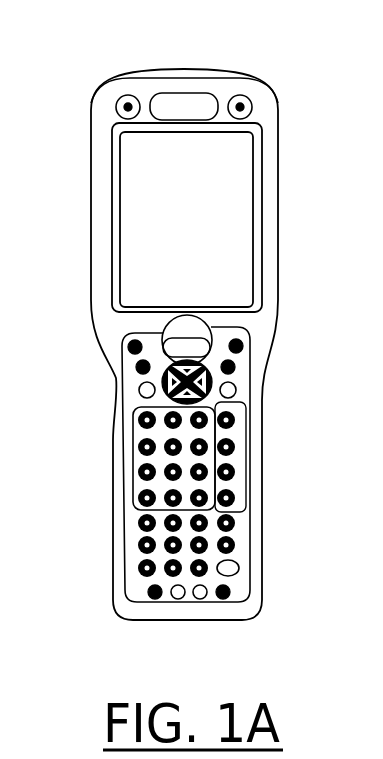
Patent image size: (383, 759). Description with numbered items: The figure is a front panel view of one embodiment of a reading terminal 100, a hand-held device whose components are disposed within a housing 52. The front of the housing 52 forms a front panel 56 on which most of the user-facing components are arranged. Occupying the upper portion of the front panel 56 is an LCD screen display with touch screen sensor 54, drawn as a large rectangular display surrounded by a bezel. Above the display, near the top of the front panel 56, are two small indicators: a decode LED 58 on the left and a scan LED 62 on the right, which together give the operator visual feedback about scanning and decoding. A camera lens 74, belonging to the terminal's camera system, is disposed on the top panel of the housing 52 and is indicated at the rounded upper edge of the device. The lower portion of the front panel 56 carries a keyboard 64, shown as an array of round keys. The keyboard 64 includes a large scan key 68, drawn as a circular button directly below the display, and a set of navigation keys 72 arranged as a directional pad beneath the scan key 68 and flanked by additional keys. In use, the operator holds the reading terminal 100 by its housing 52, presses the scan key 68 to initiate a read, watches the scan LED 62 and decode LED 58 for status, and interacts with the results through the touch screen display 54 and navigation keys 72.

The reading terminal 100 is at (107, 38).
The housing 52 is at (278, 257).
The LCD screen display with touch screen sensor 54 is at (132, 220).
The front panel 56 is at (91, 152).
The decode LED 58 is at (116, 99).
The scan LED 62 is at (252, 99).
The keyboard 64 is at (140, 462).
The scan key 68 is at (173, 337).
The navigation keys 72 is at (138, 379).
The camera lens 74 is at (174, 71).